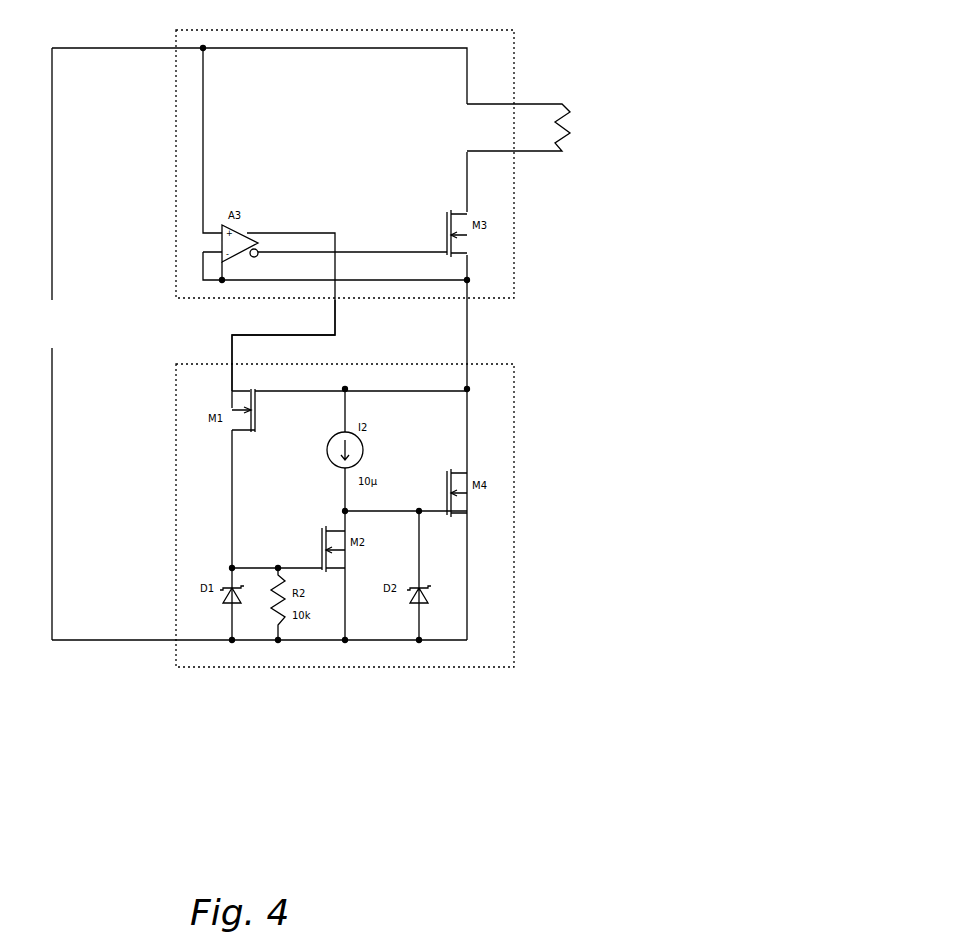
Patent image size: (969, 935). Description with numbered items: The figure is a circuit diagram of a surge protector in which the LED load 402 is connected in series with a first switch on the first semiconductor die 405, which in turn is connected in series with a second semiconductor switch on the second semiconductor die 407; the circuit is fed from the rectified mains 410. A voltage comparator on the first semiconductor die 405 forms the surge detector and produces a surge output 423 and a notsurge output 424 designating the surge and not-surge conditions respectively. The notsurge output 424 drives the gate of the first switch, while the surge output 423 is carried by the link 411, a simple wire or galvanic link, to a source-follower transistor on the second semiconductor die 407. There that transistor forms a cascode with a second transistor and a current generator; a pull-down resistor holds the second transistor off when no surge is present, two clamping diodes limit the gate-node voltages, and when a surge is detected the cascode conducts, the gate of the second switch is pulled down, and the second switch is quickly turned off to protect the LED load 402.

The LED load 402 is at (546, 130).
The first semiconductor die 405 is at (515, 258).
The second semiconductor die 407 is at (515, 405).
The rectified mains 410 is at (80, 344).
The link 411 is at (338, 322).
The surge output 423 is at (308, 233).
The notsurge output 424 is at (377, 252).